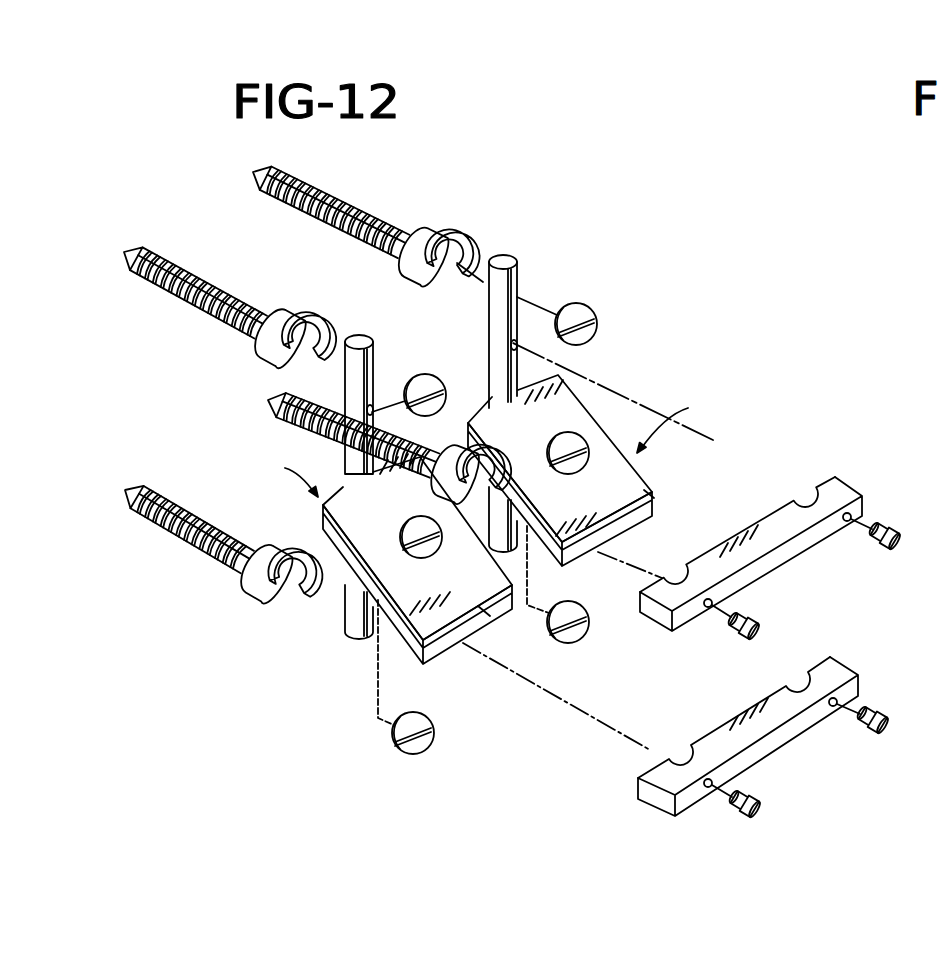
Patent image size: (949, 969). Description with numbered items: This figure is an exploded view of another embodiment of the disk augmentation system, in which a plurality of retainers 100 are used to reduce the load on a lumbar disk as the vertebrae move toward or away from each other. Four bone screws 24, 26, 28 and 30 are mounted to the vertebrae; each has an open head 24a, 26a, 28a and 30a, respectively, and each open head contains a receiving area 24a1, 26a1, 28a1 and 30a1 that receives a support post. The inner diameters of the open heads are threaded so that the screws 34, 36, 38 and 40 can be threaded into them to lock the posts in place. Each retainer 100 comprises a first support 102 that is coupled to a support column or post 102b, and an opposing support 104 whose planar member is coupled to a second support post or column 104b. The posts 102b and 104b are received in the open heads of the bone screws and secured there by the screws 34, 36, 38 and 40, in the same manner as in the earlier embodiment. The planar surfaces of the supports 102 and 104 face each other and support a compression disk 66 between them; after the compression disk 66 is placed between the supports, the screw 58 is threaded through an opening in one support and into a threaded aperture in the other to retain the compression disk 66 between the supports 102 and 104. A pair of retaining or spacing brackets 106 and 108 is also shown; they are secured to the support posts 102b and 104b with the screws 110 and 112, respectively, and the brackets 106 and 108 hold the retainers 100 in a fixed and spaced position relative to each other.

The screw 24 is at (327, 187).
The open head 24a is at (474, 153).
The receiving area 24a1 is at (558, 183).
The screw 26 is at (216, 188).
The open head 26a is at (283, 293).
The receiving area 26a1 is at (360, 250).
The screw 28 is at (263, 413).
The open head 28a is at (445, 452).
The receiving area 28a1 is at (561, 403).
The screw 30 is at (163, 528).
The open head 30a is at (268, 584).
The receiving area 30a1 is at (300, 604).
The screw 34 is at (590, 308).
The screw 36 is at (358, 388).
The screw 38 is at (585, 631).
The screw 40 is at (502, 748).
The screw 58 is at (412, 524).
The compression disk 66 is at (536, 628).
The retainer 100 is at (282, 450).
The support 102 is at (457, 572).
The support post 102b is at (408, 289).
The opposing support 104 is at (507, 688).
The support post 104b is at (343, 643).
The spacing bracket 106 is at (871, 419).
The spacing bracket 108 is at (853, 670).
The screw 110 is at (940, 453).
The screw 112 is at (867, 730).